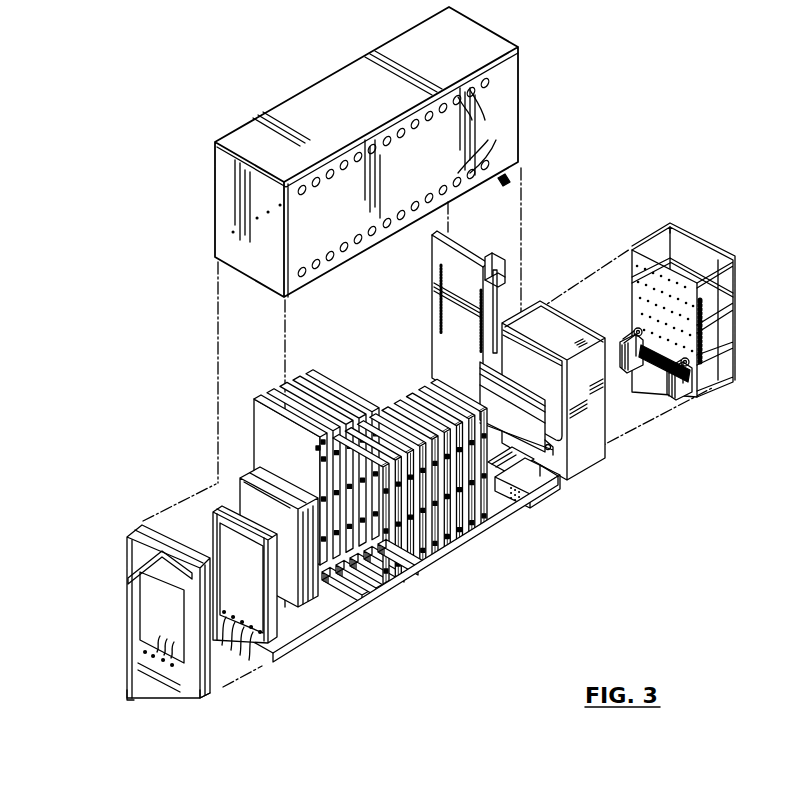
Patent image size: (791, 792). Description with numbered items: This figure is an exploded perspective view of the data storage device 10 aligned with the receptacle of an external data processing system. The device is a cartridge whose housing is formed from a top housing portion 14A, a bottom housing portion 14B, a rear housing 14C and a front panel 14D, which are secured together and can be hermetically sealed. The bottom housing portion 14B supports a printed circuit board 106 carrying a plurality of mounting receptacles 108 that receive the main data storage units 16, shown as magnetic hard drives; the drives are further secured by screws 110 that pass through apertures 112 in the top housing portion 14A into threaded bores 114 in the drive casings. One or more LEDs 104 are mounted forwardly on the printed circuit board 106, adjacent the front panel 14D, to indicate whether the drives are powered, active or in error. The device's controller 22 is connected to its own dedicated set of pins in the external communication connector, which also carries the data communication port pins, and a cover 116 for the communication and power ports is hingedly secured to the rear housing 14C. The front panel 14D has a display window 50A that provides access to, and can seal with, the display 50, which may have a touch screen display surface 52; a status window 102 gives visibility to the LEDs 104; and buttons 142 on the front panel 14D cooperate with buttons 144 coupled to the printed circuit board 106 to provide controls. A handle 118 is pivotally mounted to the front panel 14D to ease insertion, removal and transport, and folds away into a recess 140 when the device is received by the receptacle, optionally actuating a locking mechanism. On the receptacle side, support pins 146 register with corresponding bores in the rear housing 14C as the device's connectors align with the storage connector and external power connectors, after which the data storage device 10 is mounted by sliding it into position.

The data storage device 10 is at (391, 367).
The top housing portion 14A is at (290, 112).
The bottom housing portion 14B is at (398, 582).
The rear housing 14C is at (582, 458).
The front panel 14D is at (146, 587).
The main data storage units 16 is at (400, 387).
The controller 22 is at (430, 242).
The display 50 is at (234, 551).
The display window 50A is at (180, 613).
The touch screen display surface 52 is at (153, 580).
The status window 102 is at (172, 687).
The LEDs 104 is at (252, 643).
The printed circuit board 106 is at (513, 505).
The mounting receptacles 108 is at (360, 588).
The screws 110 is at (503, 180).
The apertures 112 is at (485, 131).
The threaded bores 114 is at (318, 448).
The cover 116 is at (488, 382).
The handle 118 is at (127, 693).
The recess 140 is at (194, 700).
The buttons 142 is at (178, 636).
The buttons 144 is at (236, 645).
The support pins 146 is at (684, 357).